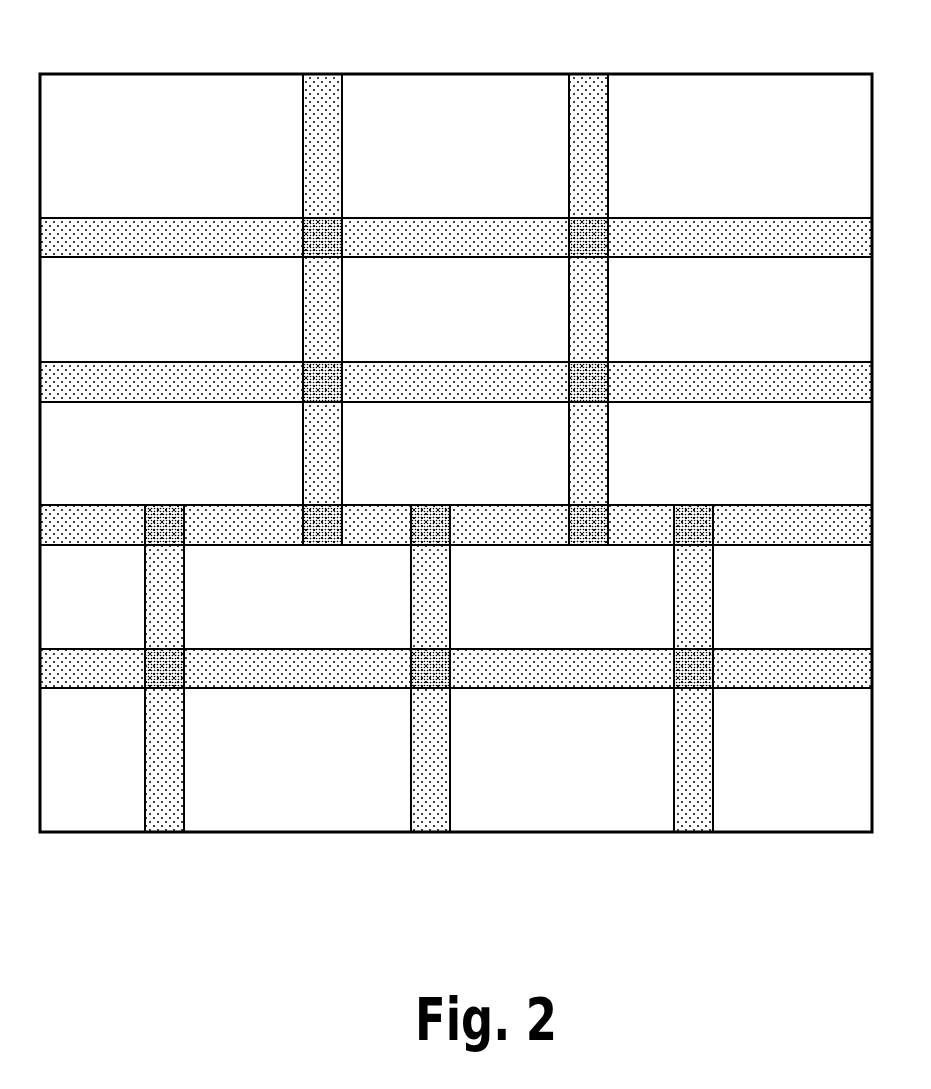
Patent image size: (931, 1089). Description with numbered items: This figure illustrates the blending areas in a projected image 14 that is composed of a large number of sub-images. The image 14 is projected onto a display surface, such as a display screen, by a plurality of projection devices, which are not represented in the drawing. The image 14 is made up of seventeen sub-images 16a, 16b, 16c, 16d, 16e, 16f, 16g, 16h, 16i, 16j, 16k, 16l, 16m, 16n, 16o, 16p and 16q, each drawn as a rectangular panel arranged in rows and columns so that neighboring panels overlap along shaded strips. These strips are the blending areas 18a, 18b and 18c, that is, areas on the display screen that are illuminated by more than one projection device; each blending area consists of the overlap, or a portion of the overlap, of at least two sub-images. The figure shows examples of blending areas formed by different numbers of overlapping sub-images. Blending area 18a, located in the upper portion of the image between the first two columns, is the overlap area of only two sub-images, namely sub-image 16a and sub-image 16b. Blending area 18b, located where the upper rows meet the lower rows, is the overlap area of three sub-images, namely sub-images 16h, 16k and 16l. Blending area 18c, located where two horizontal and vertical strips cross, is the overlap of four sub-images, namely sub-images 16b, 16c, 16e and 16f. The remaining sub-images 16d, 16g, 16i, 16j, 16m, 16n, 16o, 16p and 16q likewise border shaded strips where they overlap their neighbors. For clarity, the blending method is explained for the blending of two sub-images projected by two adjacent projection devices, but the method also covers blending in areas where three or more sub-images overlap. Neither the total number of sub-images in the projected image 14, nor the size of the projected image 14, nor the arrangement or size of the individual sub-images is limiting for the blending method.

The image 14 is at (144, 73).
The sub-image 16a is at (171, 146).
The sub-image 16b is at (455, 146).
The sub-image 16c is at (740, 146).
The sub-image 16d is at (171, 309).
The sub-image 16e is at (455, 309).
The sub-image 16f is at (740, 309).
The sub-image 16g is at (171, 453).
The sub-image 16h is at (455, 453).
The sub-image 16i is at (740, 453).
The sub-image 16j is at (92, 597).
The sub-image 16k is at (297, 597).
The sub-image 16l is at (562, 597).
The sub-image 16m is at (792, 597).
The sub-image 16n is at (92, 760).
The sub-image 16o is at (297, 760).
The sub-image 16p is at (562, 760).
The sub-image 16q is at (792, 760).
The blending area 18a is at (317, 154).
The blending area 18b is at (423, 530).
The blending area 18c is at (595, 245).